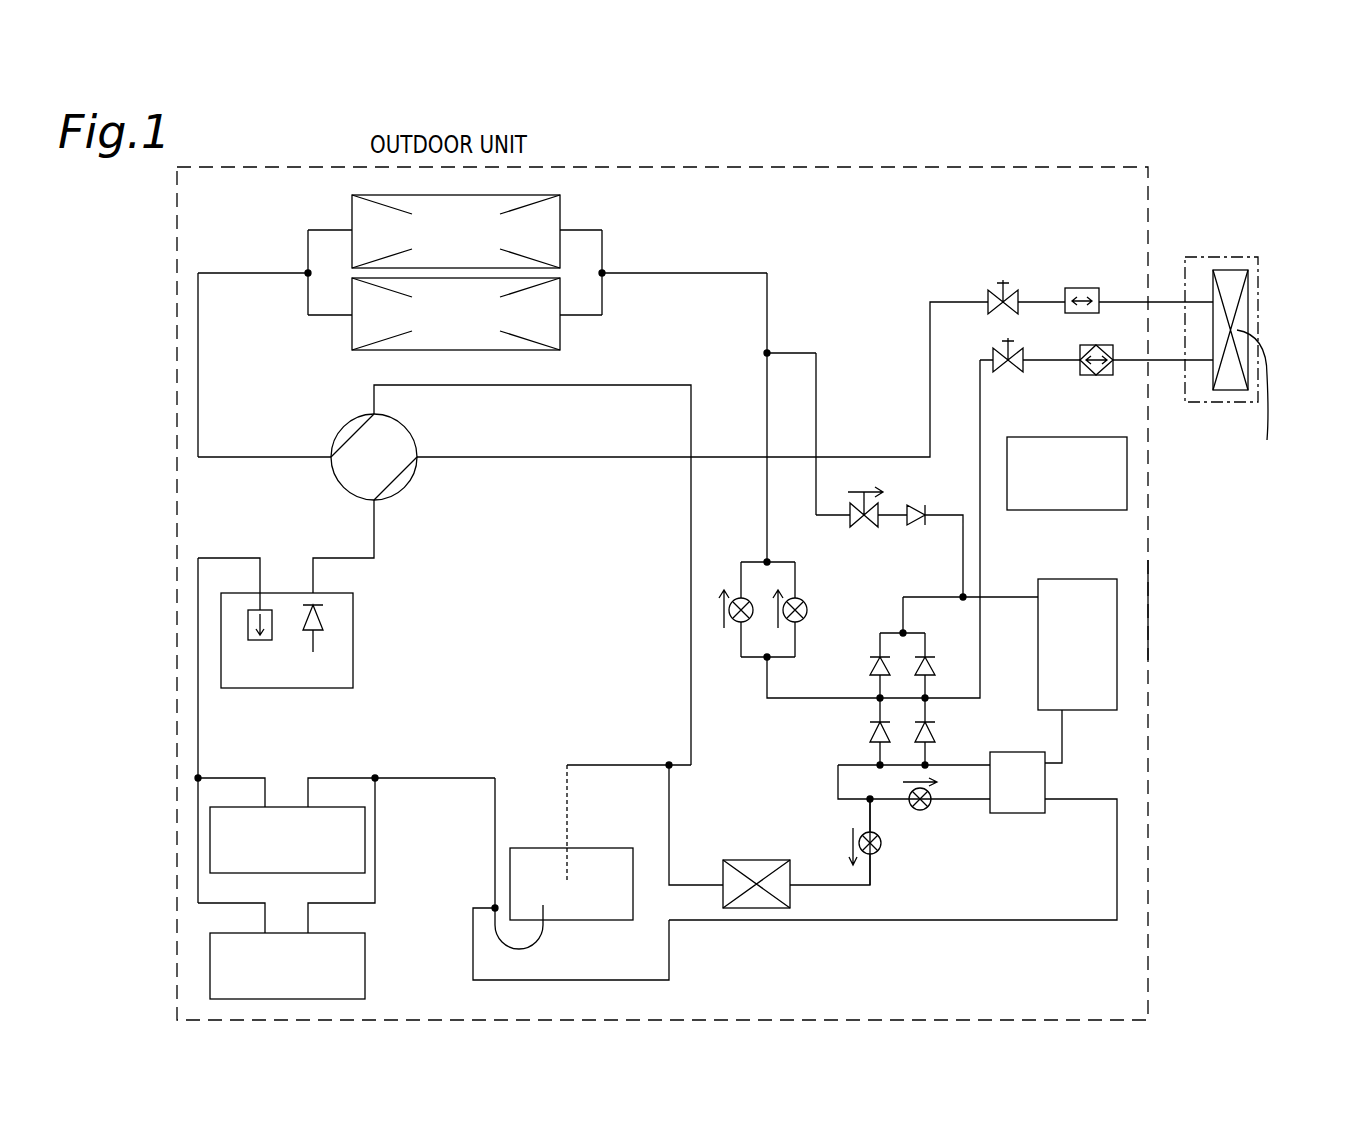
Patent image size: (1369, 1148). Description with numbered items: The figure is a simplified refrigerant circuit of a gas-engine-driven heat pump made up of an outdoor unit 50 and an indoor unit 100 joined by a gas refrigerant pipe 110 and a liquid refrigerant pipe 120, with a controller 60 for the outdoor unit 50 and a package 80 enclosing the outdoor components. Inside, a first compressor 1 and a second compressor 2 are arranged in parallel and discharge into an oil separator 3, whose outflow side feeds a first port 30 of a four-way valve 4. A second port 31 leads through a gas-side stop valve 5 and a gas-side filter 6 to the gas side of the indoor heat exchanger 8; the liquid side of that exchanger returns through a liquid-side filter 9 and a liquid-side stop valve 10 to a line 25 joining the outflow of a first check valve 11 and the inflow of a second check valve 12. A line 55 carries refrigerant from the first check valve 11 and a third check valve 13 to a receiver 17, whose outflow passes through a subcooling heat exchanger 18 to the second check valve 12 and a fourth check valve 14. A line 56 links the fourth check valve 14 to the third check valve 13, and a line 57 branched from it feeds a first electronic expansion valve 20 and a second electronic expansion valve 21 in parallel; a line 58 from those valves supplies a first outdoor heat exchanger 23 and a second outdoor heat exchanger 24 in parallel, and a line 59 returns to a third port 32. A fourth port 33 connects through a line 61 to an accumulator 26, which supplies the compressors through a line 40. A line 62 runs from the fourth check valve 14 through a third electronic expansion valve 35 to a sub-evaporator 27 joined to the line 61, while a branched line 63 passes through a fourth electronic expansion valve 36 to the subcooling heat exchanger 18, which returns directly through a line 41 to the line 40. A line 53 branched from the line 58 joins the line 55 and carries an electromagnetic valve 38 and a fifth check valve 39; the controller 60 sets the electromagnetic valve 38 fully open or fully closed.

The first compressor 1 is at (287, 807).
The second compressor 2 is at (365, 965).
The oil separator 3 is at (353, 640).
The four-way valve 4 is at (418, 421).
The gas-side stop valve 5 is at (1018, 290).
The gas-side filter 6 is at (1080, 288).
The indoor heat exchanger 8 is at (1234, 270).
The liquid-side filter 9 is at (1100, 345).
The liquid-side stop valve 10 is at (1023, 350).
The first check valve 11 is at (938, 665).
The second check valve 12 is at (940, 731).
The third check valve 13 is at (870, 665).
The fourth check valve 14 is at (870, 732).
The receiver 17 is at (1085, 579).
The subcooling heat exchanger 18 is at (1016, 813).
The first electronic expansion valve 20 is at (808, 610).
The second electronic expansion valve 21 is at (740, 625).
The first outdoor heat exchanger 23 is at (560, 205).
The second outdoor heat exchanger 24 is at (560, 341).
The line 25 is at (928, 687).
The accumulator 26 is at (611, 848).
The sub-evaporator 27 is at (754, 860).
The first port 30 is at (343, 546).
The second port 31 is at (702, 399).
The third port 32 is at (264, 441).
The fourth port 33 is at (512, 571).
The third electronic expansion valve 35 is at (880, 852).
The fourth electronic expansion valve 36 is at (919, 812).
The electromagnetic valve 38 is at (862, 532).
The fifth check valve 39 is at (920, 551).
The line 40 is at (495, 825).
The line 41 is at (669, 954).
The outdoor unit 50 is at (550, 166).
The line 53 is at (816, 405).
The line 55 is at (1012, 596).
The line 56 is at (872, 687).
The line 57 is at (777, 702).
The line 58 is at (696, 273).
The line 59 is at (198, 366).
The controller 60 is at (1067, 437).
The line 61 is at (691, 569).
The line 62 is at (868, 809).
The line 63 is at (894, 805).
The package 80 is at (1150, 608).
The indoor unit 100 is at (1218, 257).
The gas refrigerant pipe 110 is at (1165, 302).
The liquid refrigerant pipe 120 is at (1165, 360).